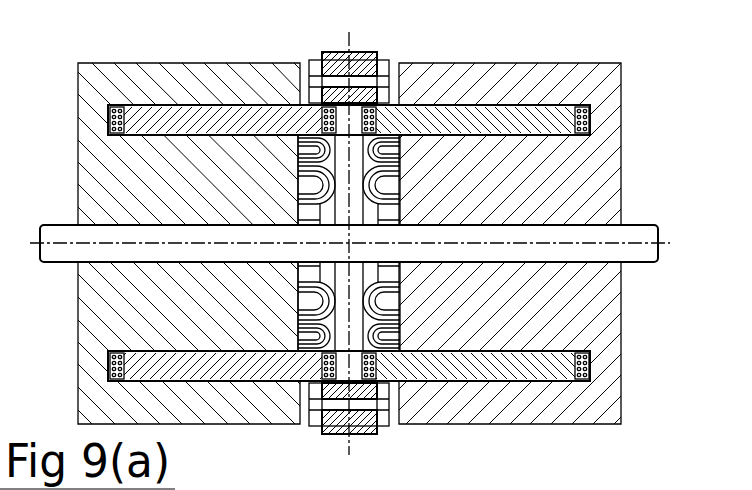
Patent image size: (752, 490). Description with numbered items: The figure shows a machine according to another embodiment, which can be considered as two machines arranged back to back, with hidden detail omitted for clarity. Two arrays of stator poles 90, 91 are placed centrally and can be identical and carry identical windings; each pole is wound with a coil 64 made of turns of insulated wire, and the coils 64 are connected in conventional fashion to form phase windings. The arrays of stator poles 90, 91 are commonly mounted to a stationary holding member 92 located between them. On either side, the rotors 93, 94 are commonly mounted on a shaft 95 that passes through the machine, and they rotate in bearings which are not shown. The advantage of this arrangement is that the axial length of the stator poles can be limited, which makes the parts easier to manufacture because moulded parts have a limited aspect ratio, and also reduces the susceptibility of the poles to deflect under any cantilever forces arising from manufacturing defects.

The array of stator poles 90 is at (180, 117).
The array of stator poles 91 is at (503, 113).
The stationary holding member 92 is at (350, 50).
The rotor 93 is at (100, 100).
The rotor 94 is at (600, 100).
The coil 64 is at (593, 130).
The shaft 95 is at (607, 235).